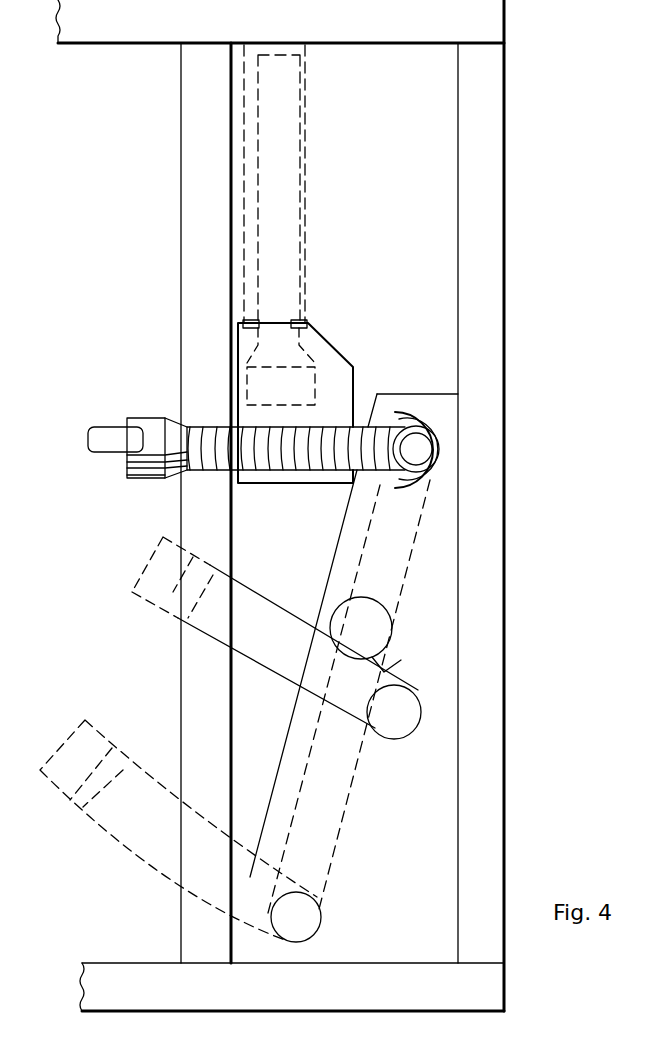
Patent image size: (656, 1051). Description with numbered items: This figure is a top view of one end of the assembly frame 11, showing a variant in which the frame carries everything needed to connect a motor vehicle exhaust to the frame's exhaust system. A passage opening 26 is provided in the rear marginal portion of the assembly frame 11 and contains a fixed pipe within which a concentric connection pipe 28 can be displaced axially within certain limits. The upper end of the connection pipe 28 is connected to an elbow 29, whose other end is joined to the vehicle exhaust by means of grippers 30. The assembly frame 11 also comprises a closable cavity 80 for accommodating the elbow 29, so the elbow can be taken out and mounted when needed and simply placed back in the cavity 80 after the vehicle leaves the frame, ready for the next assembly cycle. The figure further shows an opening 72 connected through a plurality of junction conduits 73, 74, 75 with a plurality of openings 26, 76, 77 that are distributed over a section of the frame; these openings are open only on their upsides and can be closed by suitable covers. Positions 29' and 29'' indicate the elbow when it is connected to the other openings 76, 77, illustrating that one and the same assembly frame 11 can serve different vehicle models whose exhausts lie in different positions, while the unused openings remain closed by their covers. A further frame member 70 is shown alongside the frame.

The assembly frame 11 is at (138, 80).
The support wall 70 is at (440, 90).
The cavity 80 is at (303, 95).
The elbow 29 is at (324, 323).
The grippers 30 is at (112, 437).
The passage opening 26 is at (440, 443).
The connection pipe 28 is at (448, 483).
The junction conduit 73 is at (407, 523).
The opening 72 is at (385, 633).
The junction conduit 74 is at (395, 670).
The opening 76 is at (412, 720).
The junction conduit 75 is at (330, 803).
The opening 77 is at (327, 928).
The elbow 29' is at (275, 632).
The elbow 29'' is at (178, 830).